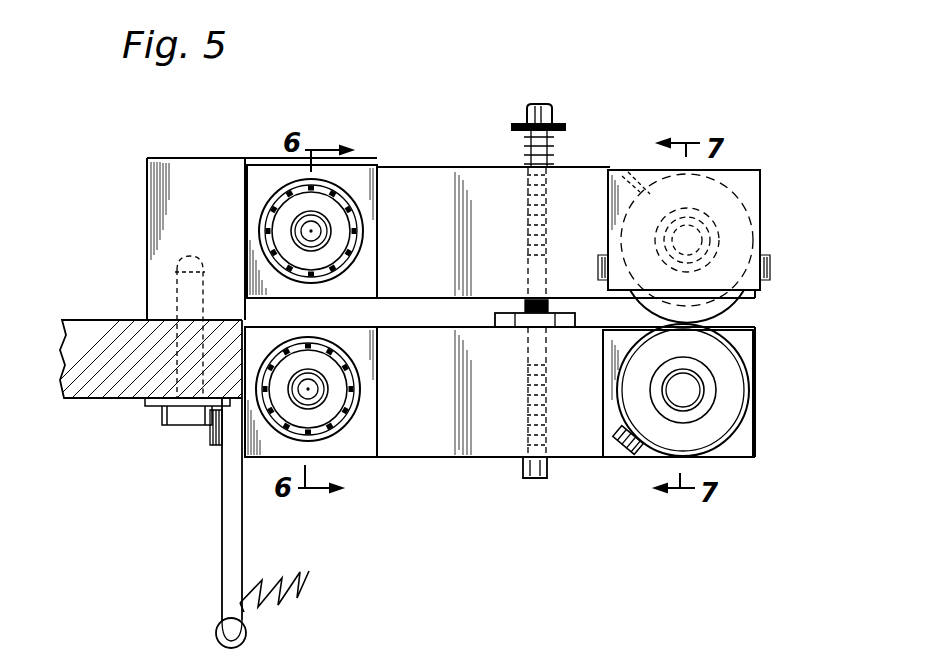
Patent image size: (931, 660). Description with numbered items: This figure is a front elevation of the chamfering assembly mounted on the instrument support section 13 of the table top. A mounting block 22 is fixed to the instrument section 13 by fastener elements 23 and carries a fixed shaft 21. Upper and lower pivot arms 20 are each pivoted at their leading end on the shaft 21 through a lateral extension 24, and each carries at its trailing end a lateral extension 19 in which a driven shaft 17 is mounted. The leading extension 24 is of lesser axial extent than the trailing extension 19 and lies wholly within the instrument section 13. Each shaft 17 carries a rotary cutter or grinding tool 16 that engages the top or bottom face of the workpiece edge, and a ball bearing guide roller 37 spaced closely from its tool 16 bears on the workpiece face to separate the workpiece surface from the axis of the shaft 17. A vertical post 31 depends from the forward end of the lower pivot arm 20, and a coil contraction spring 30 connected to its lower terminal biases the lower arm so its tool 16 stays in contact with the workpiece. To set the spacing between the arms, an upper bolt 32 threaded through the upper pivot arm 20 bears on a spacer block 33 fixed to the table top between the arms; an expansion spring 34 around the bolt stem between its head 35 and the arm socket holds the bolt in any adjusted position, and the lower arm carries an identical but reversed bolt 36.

The instrument support section 13 is at (78, 400).
The rotary cutter or grinding tool 16 is at (615, 232).
The driven shaft 17 is at (720, 236).
The lateral extension of trailing end of pivot arm 19 is at (760, 185).
The pivot arm 20 is at (456, 167).
The fixed shaft 21 is at (323, 237).
The mounting block 22 is at (152, 205).
The fastener element 23 is at (190, 256).
The lateral extension of leading end of pivot arm 24 is at (379, 186).
The coil contraction spring 30 is at (293, 582).
The vertical post 31 is at (222, 552).
The upper bolt 32 is at (560, 148).
The spacer block 33 is at (497, 322).
The expansion spring 34 is at (527, 142).
The bolt head 35 is at (540, 104).
The lower bolt 36 is at (537, 480).
The ball bearing guide roller 37 is at (752, 272).